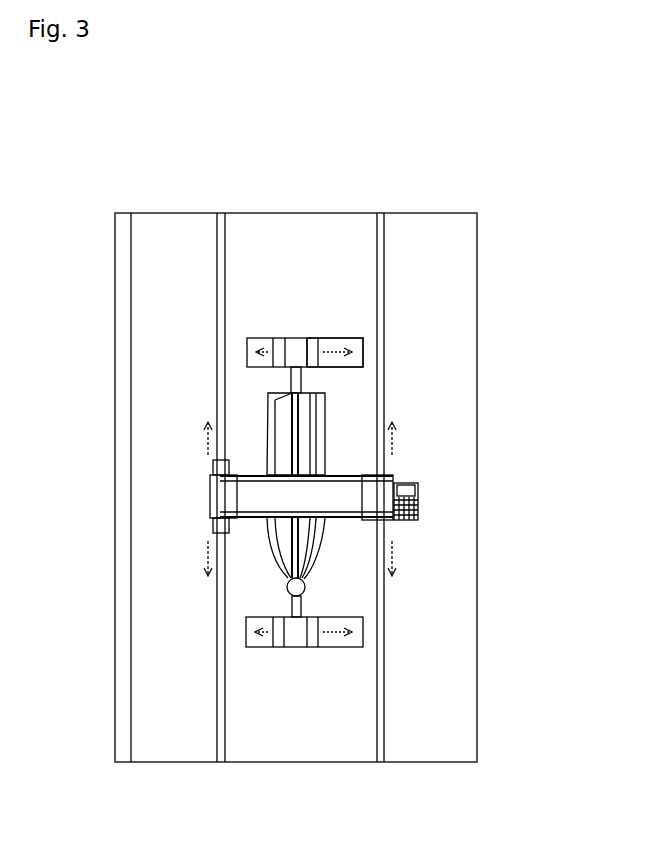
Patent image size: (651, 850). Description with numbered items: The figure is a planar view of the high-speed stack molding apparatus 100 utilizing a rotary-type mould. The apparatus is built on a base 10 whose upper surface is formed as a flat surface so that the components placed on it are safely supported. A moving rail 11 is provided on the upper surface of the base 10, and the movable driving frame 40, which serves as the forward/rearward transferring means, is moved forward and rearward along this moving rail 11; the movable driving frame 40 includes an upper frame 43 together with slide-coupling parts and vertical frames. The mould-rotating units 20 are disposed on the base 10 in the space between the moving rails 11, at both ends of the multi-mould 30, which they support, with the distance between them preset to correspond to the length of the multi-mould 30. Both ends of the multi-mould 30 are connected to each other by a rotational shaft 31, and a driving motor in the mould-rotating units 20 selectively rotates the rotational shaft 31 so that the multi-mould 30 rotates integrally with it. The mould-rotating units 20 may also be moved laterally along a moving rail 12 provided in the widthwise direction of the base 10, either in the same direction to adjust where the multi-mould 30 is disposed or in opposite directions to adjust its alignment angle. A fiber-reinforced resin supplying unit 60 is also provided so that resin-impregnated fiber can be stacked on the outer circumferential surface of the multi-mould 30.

The high-speed stack molding apparatus 100 is at (131, 170).
The base 10 is at (459, 204).
The moving rail 11 is at (383, 284).
The moving rail 12 is at (347, 334).
The mould-rotating unit 20 is at (297, 334).
The multi-mould 30 is at (329, 560).
The rotational shaft 31 is at (289, 604).
The movable driving frame 40 is at (201, 495).
The upper frame 43 is at (345, 497).
The fiber-reinforced resin supplying unit 60 is at (426, 498).